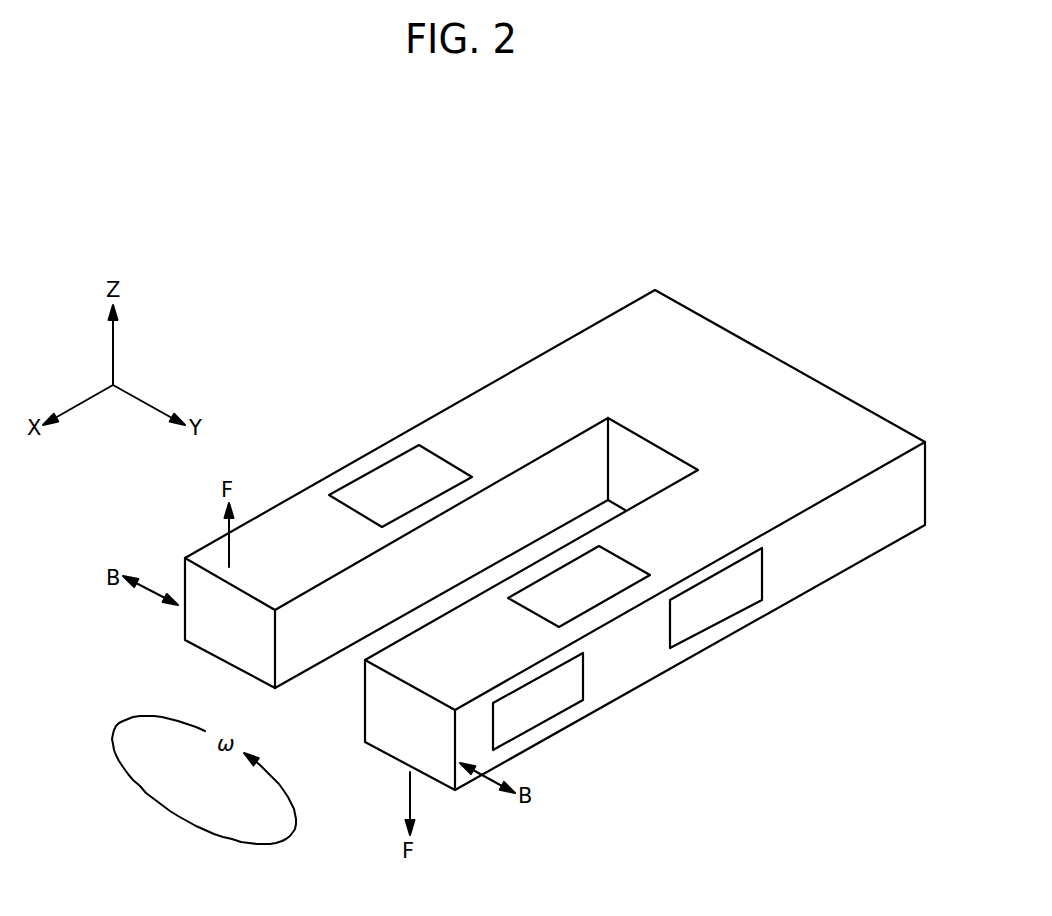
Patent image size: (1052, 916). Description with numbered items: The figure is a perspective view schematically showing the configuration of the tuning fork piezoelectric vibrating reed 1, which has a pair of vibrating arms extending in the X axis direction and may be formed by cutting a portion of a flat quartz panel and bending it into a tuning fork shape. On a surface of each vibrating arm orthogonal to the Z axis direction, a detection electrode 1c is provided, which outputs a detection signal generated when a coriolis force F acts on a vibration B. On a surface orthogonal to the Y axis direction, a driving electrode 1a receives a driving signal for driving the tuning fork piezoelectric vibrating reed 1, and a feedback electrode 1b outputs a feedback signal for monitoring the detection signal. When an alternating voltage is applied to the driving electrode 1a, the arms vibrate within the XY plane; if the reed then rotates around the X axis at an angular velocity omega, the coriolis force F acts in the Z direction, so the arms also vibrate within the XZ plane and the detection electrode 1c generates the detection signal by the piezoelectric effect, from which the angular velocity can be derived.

The tuning fork piezoelectric vibrating reed 1 is at (515, 402).
The driving electrode 1a is at (717, 600).
The feedback electrode 1b is at (540, 702).
The detection electrode 1c is at (590, 592).